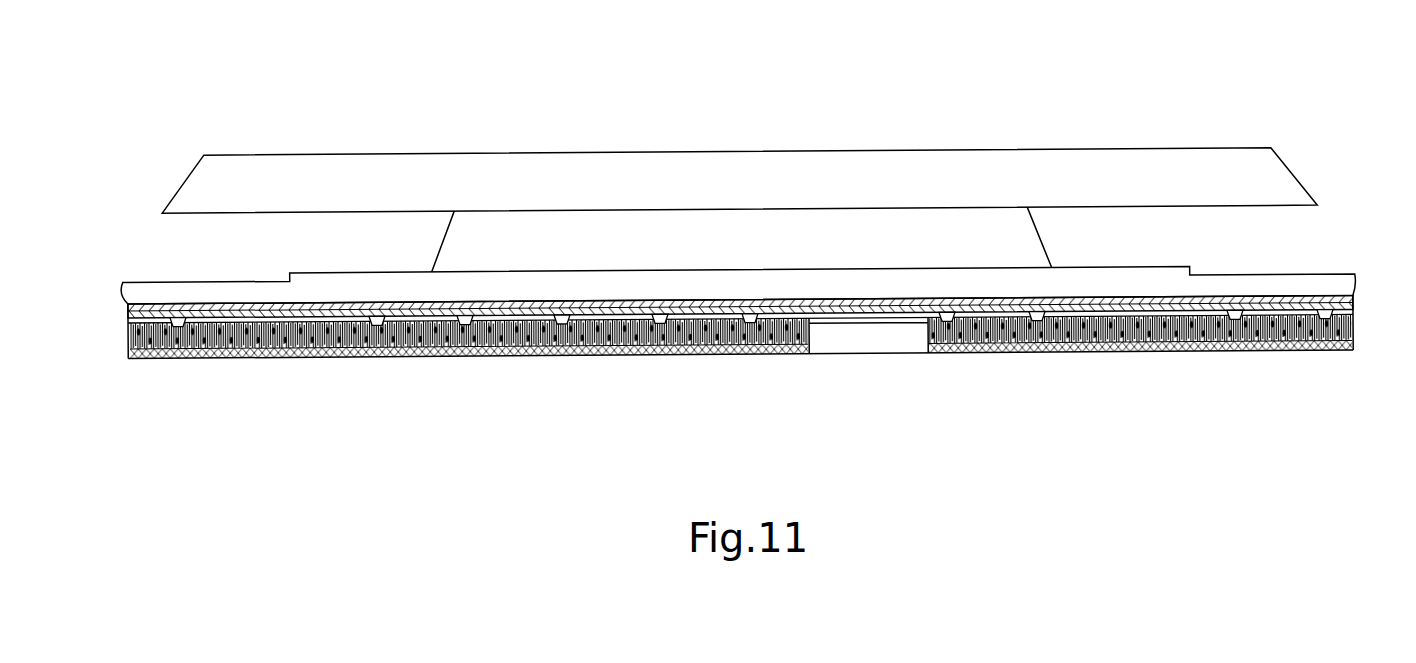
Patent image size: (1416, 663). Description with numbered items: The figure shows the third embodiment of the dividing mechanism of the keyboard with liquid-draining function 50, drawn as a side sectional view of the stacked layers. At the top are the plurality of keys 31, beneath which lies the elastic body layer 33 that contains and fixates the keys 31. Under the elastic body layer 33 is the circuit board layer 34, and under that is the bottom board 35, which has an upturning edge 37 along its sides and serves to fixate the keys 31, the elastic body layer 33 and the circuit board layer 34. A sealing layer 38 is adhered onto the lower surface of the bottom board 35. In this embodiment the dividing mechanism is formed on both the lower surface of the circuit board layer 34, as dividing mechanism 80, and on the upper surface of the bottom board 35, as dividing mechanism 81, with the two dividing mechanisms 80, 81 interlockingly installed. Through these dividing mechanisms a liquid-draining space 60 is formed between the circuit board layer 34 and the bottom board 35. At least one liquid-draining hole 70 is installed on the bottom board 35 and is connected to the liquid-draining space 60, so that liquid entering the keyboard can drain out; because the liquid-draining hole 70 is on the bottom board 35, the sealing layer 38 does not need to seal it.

The keys 31 is at (1105, 165).
The elastic body layer 33 is at (744, 322).
The circuit board layer 34 is at (130, 314).
The bottom board 35 is at (129, 341).
The upturning edge 37 is at (177, 296).
The sealing layer 38 is at (278, 362).
The keyboard with liquid-draining function 50 is at (743, 222).
The liquid-draining space 60 is at (1353, 323).
The liquid-draining hole 70 is at (877, 343).
The dividing mechanism 80 is at (1238, 306).
The dividing mechanism 81 is at (1332, 304).